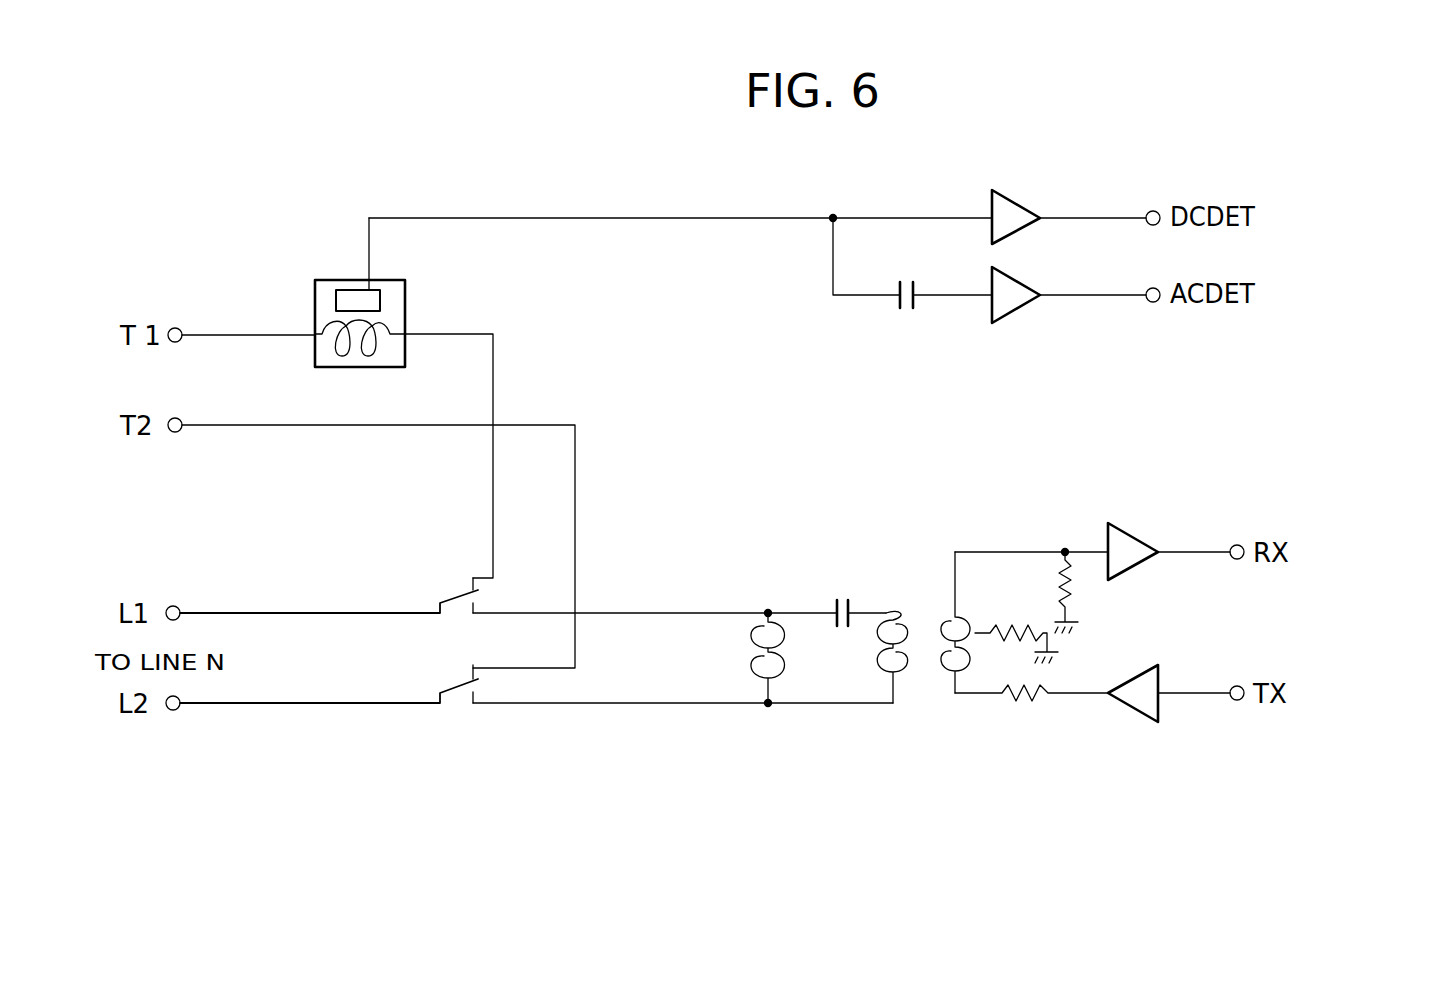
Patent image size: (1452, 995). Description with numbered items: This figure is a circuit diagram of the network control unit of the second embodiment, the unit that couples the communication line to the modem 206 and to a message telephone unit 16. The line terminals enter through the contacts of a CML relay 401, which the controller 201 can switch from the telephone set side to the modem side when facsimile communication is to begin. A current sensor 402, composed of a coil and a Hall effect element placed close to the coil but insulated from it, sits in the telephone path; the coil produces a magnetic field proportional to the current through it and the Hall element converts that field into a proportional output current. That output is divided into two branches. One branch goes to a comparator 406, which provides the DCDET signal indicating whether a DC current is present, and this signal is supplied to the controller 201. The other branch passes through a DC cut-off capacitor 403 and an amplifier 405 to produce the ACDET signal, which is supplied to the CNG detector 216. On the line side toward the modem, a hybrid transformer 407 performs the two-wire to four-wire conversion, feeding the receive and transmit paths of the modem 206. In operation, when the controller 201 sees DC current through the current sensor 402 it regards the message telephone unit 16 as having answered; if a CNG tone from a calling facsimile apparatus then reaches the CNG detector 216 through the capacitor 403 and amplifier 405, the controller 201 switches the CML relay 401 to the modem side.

The CML relay 401 is at (448, 710).
The current sensor 402 is at (345, 280).
The DC cut-off capacitor 403 is at (906, 312).
The amplifier 405 is at (1022, 305).
The comparator 406 is at (1022, 205).
The hybrid transformer 407 is at (923, 688).
The message phone 16 is at (192, 390).
The controller 201 is at (1358, 229).
The CNG detector 216 is at (1347, 307).
The modem 206 is at (1320, 611).